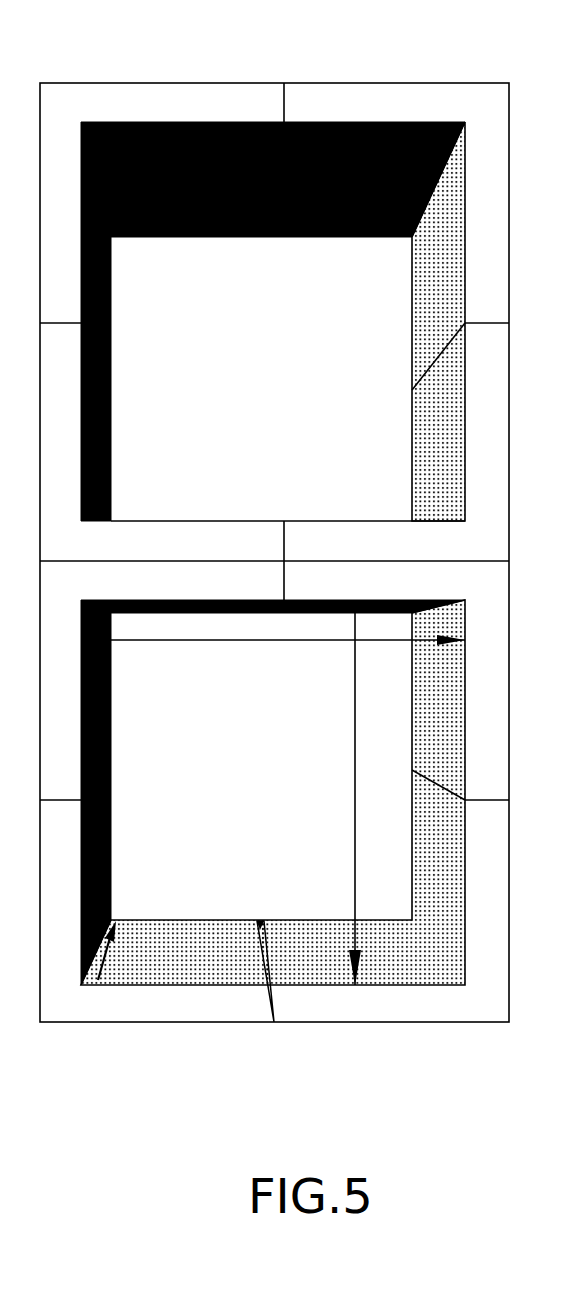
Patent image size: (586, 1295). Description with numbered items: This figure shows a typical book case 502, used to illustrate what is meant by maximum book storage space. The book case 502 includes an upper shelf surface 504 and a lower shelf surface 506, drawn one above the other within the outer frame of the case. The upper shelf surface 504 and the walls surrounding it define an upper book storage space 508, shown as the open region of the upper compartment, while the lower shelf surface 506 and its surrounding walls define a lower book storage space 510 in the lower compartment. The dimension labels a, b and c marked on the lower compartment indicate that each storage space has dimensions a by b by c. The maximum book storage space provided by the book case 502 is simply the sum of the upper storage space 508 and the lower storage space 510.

The book case 502 is at (131, 83).
The upper shelf surface 504 is at (288, 521).
The lower shelf surface 506 is at (303, 920).
The upper book storage space 508 is at (290, 398).
The lower book storage space 510 is at (294, 802).